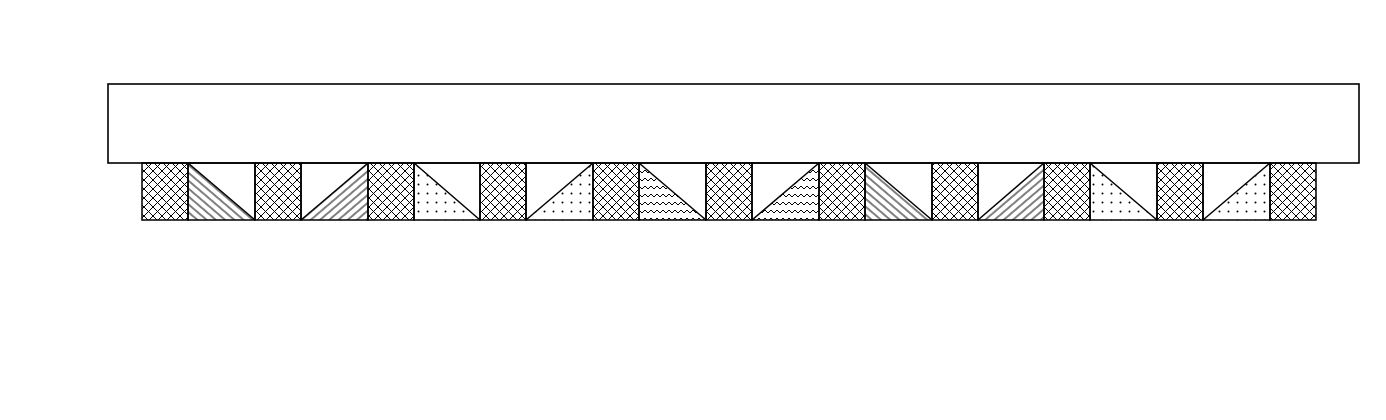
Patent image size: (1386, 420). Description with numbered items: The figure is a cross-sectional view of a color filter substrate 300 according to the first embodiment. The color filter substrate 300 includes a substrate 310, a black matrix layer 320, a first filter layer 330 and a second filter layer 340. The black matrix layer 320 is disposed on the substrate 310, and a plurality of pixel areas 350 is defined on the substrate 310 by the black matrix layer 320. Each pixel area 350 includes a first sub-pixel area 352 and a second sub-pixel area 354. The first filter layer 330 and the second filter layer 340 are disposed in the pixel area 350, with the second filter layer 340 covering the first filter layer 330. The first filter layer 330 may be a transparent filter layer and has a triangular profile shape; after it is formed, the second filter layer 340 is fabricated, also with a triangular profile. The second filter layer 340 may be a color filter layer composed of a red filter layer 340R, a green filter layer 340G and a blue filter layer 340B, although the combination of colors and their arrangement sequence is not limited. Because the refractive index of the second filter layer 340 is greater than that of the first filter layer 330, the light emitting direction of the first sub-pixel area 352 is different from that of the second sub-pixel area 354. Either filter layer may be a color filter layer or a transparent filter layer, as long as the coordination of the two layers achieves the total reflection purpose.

The color filter substrate 300 is at (1354, 392).
The substrate 310 is at (137, 117).
The black matrix layer 320 is at (166, 205).
The first filter layer 330 is at (1222, 173).
The second filter layer 340 is at (954, 271).
The blue filter layer 340B is at (800, 200).
The green filter layer 340G is at (1010, 200).
The red filter layer 340R is at (1235, 238).
The pixel area 350 is at (503, 269).
The first sub-pixel area 352 is at (566, 254).
The second sub-pixel area 354 is at (462, 260).